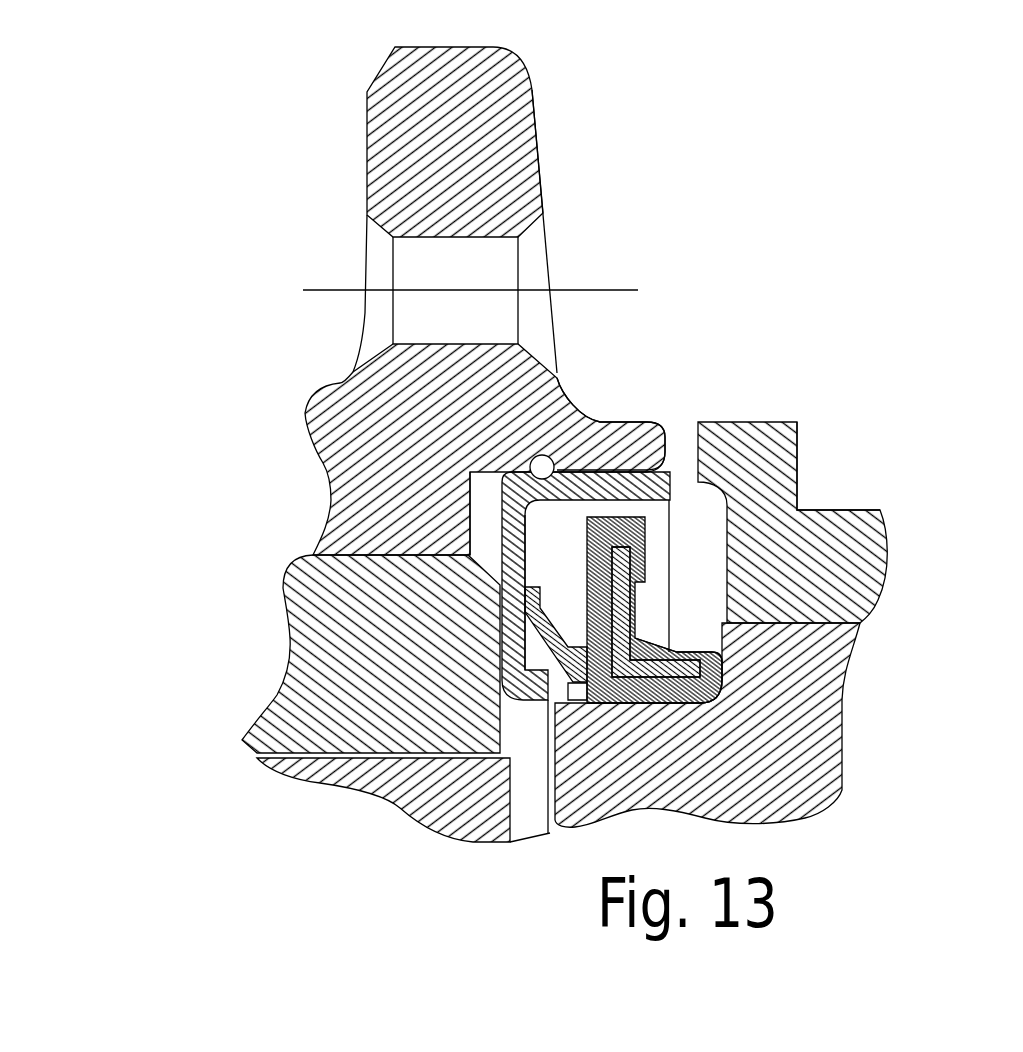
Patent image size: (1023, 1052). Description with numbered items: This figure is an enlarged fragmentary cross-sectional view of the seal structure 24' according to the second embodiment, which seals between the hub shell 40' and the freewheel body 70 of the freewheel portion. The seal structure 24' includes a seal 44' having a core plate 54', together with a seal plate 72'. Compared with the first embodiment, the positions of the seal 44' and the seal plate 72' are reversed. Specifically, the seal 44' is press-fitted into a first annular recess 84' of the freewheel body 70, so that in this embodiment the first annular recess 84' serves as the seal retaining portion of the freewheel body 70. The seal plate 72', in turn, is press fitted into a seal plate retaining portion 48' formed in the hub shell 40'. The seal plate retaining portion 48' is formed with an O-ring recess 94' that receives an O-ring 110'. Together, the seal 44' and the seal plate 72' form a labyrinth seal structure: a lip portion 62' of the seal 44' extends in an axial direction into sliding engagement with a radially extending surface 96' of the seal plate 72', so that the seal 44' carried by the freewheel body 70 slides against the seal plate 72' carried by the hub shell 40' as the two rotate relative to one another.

The seal structure 24' is at (785, 425).
The hub shell 40' is at (429, 301).
The seal 44' is at (785, 728).
The seal plate retaining portion 48' is at (324, 512).
The core plate 54' is at (654, 610).
The lip portion 62' is at (556, 635).
The freewheel body 70 is at (818, 541).
The seal plate 72' is at (404, 586).
The first annular recess 84' is at (656, 651).
The O-ring recess 94' is at (552, 507).
The radially extending surface 96' is at (348, 596).
The O-ring 110' is at (615, 410).